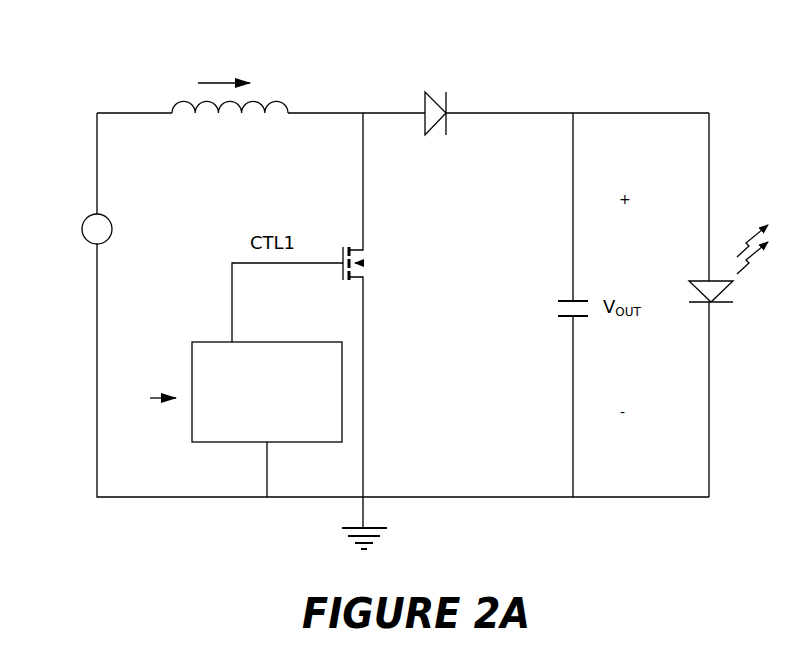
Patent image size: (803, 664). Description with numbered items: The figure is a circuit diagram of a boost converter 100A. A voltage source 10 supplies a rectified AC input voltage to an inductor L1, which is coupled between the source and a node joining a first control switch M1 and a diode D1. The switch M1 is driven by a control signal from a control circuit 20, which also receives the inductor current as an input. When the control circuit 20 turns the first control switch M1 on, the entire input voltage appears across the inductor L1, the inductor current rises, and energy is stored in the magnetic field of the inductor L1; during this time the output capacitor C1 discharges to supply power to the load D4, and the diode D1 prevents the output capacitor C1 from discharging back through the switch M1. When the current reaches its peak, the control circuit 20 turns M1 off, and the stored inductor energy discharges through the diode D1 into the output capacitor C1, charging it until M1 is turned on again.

The voltage source 10 is at (83, 228).
The control circuit 20 is at (237, 419).
The boost converter 100A is at (680, 74).
The inductor L1 is at (217, 104).
The diode D1 is at (435, 98).
The first control switch M1 is at (377, 263).
The output capacitor C1 is at (557, 306).
The load D4 is at (728, 263).